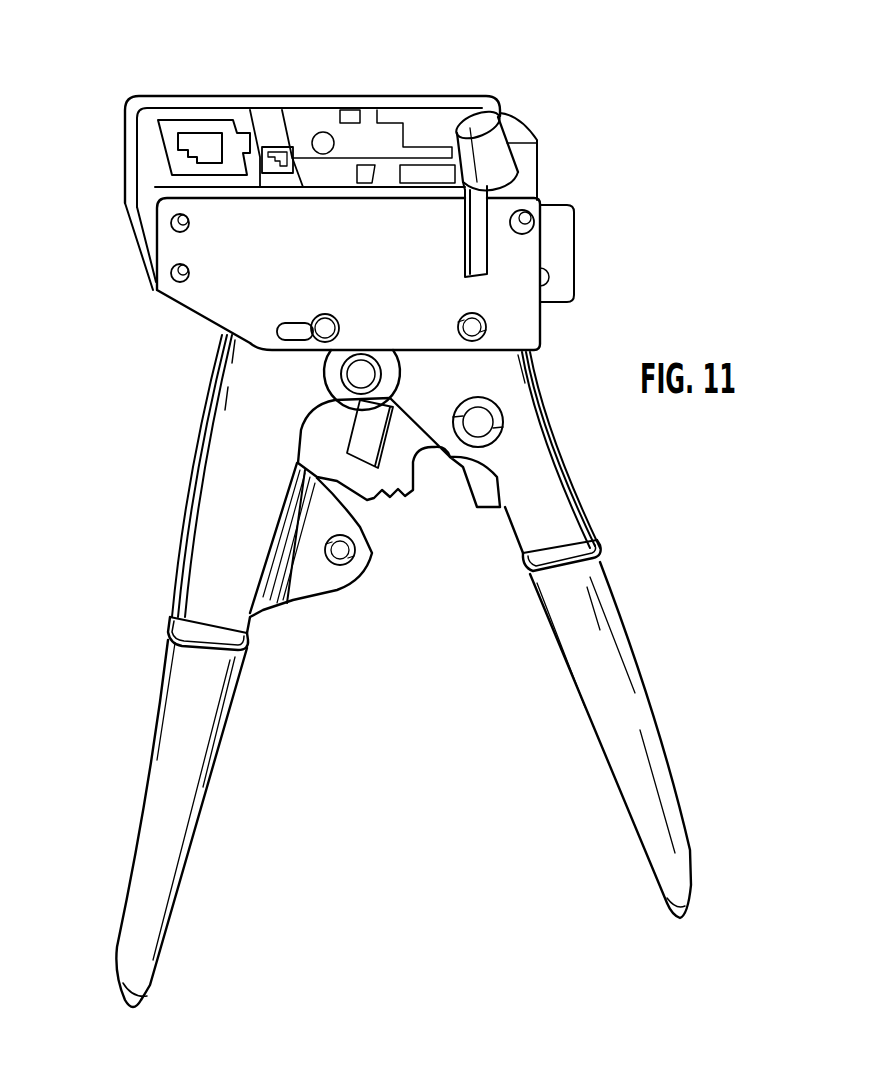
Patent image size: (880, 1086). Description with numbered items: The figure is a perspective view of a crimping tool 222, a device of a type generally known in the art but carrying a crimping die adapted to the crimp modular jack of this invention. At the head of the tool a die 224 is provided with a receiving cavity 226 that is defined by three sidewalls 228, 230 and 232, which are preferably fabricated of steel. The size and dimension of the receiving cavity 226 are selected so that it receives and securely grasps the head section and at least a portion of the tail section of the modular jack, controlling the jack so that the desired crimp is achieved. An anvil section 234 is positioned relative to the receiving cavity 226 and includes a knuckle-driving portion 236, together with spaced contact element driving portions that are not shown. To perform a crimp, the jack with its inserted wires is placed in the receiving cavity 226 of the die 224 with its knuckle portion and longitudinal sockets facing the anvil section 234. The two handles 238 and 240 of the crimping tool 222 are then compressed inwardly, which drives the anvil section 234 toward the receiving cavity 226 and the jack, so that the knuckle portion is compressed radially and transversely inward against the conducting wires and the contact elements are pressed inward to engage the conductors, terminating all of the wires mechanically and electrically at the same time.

The crimping tool 222 is at (460, 828).
The die 224 is at (247, 86).
The receiving cavity 226 is at (203, 143).
The sidewall 228 is at (143, 226).
The sidewall 230 is at (157, 138).
The sidewall 232 is at (200, 113).
The anvil section 234 is at (298, 85).
The knuckle-driving portion 236 is at (295, 157).
The handle 238 is at (640, 673).
The handle 240 is at (205, 790).